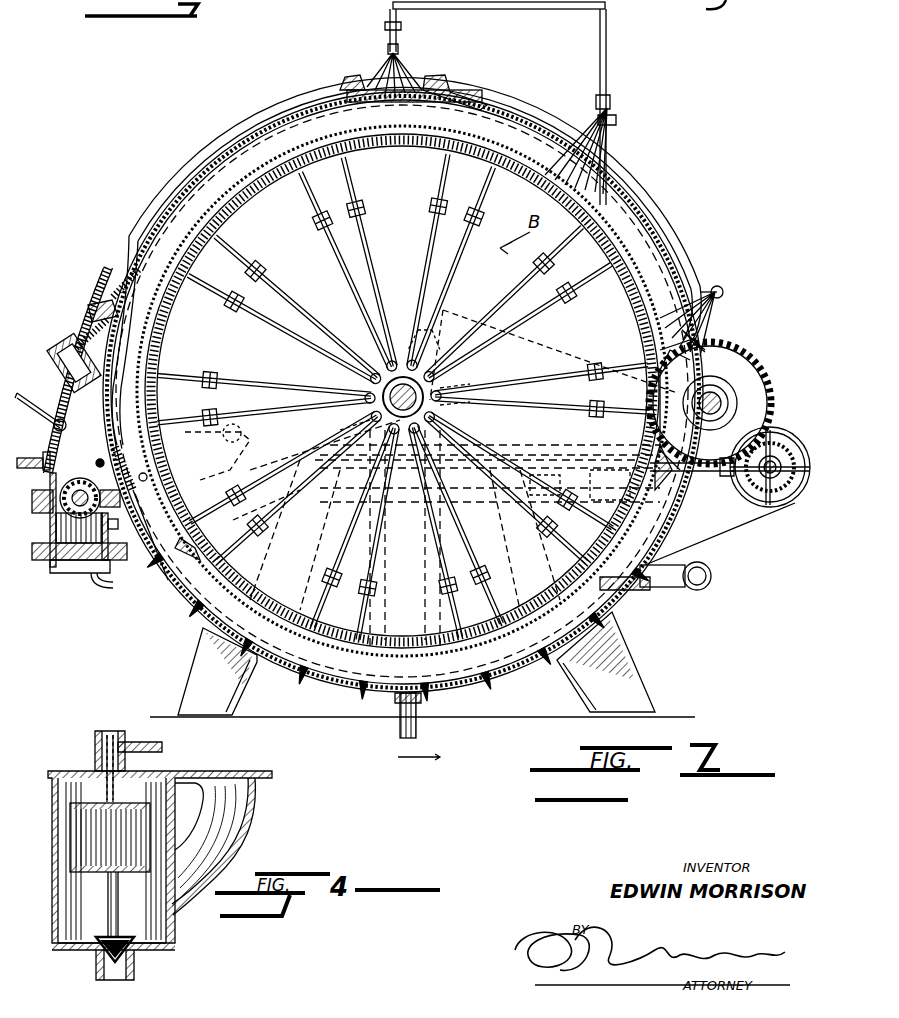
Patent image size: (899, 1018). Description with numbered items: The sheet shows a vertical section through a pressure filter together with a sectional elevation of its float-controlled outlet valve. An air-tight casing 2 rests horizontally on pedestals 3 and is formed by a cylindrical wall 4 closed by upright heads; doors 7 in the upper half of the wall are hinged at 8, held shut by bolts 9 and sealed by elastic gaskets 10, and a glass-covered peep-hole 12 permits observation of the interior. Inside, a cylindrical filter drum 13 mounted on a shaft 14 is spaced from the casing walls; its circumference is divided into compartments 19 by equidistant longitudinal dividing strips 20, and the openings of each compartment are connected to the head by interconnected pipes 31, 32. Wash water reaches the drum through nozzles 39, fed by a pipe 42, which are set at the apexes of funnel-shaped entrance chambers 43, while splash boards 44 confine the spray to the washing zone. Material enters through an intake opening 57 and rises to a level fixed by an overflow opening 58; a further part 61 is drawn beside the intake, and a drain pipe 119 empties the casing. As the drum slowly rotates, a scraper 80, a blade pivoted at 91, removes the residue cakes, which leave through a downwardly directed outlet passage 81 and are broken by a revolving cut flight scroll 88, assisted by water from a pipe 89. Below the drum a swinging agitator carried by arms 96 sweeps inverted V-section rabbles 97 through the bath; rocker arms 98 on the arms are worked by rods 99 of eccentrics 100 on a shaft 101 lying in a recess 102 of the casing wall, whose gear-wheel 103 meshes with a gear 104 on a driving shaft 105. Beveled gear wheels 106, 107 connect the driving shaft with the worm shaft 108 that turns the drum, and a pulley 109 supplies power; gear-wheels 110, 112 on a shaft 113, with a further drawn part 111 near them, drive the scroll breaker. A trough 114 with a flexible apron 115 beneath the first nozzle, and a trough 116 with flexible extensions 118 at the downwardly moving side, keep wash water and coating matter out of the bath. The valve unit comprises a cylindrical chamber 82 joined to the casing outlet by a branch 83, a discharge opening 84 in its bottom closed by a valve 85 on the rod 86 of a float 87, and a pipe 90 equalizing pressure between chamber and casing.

In FIG. 2, the air-tight casing 2 is at (185, 595).
In FIG. 2, the pedestals 3 is at (200, 660).
In FIG. 2, the cylindrical wall 4 is at (530, 665).
In FIG. 2, the doors 7 is at (275, 130).
In FIG. 2, the hinges 8 is at (352, 78).
In FIG. 2, the bolts 9 is at (88, 306).
In FIG. 2, the gaskets 10 is at (470, 100).
In FIG. 2, the peep-hole 12 is at (58, 358).
In FIG. 2, the filter drum 13 is at (156, 337).
In FIG. 2, the shaft 14 is at (380, 380).
In FIG. 2, the compartments 19 is at (300, 190).
In FIG. 2, the dividing strips 20 is at (200, 252).
In FIG. 2, the pipes 31 is at (290, 283).
In FIG. 2, the pipes 32 is at (470, 386).
In FIG. 2, the nozzles 39 is at (400, 40).
In FIG. 2, the pipe 42 is at (612, 148).
In FIG. 2, the entrance chambers 43 is at (400, 60).
In FIG. 2, the splash boards 44 is at (233, 153).
In FIG. 2, the intake opening 57 is at (630, 588).
In FIG. 2, the overflow opening 58 is at (242, 433).
In FIG. 2, the bearing 61 is at (712, 576).
In FIG. 2, the scraper 80 is at (116, 432).
In FIG. 2, the outlet passage 81 is at (52, 438).
In FIG. 4, the cylindrical chamber 82 is at (52, 905).
In FIG. 2, the branch 83 is at (113, 585).
In FIG. 4, the branch 83 is at (248, 835).
In FIG. 4, the discharge opening 84 is at (134, 968).
In FIG. 4, the valve 85 is at (90, 950).
In FIG. 4, the rod 86 is at (120, 918).
In FIG. 4, the float 87 is at (110, 837).
In FIG. 2, the cut flight scroll 88 is at (50, 525).
In FIG. 2, the pipe 89 is at (48, 418).
In FIG. 2, the pipe 90 is at (32, 471).
In FIG. 4, the pipe 90 is at (160, 746).
In FIG. 2, the pivot 91 is at (96, 463).
In FIG. 2, the arms 96 is at (275, 590).
In FIG. 2, the rabbles 97 is at (215, 622).
In FIG. 2, the rocker arms 98 is at (440, 300).
In FIG. 2, the rods 99 is at (560, 345).
In FIG. 2, the eccentrics 100 is at (728, 403).
In FIG. 2, the shaft 101 is at (740, 395).
In FIG. 2, the recess 102 is at (718, 350).
In FIG. 2, the gear-wheel 103 is at (745, 360).
In FIG. 2, the gear 104 is at (780, 440).
In FIG. 2, the driving shaft 105 is at (710, 490).
In FIG. 2, the beveled gear wheel 106 is at (778, 505).
In FIG. 2, the beveled gear wheel 107 is at (745, 523).
In FIG. 2, the worm shaft 108 is at (590, 460).
In FIG. 2, the pulley 109 is at (768, 505).
In FIG. 2, the gear-wheel 110 is at (370, 440).
In FIG. 2, the bracket 111 is at (180, 538).
In FIG. 2, the gear-wheel 112 is at (126, 530).
In FIG. 2, the shaft 113 is at (260, 505).
In FIG. 2, the trough 114 is at (662, 458).
In FIG. 2, the flexible apron 115 is at (625, 465).
In FIG. 2, the trough 116 is at (215, 432).
In FIG. 2, the flexible extensions 118 is at (255, 462).
In FIG. 2, the drain pipe 119 is at (417, 728).